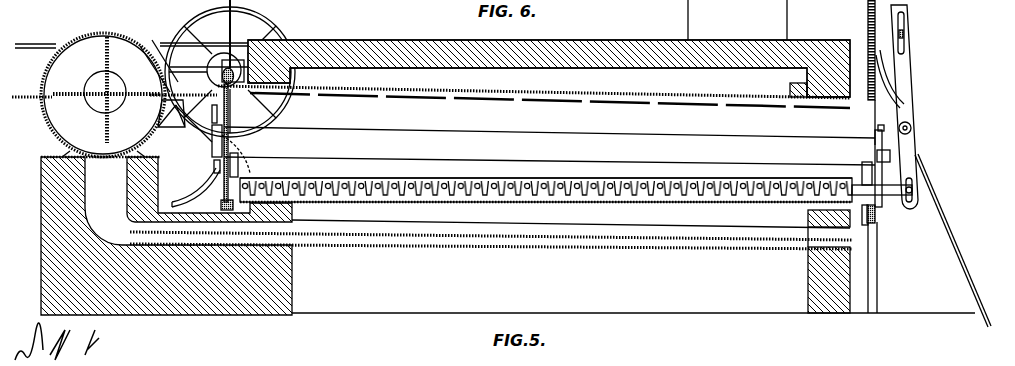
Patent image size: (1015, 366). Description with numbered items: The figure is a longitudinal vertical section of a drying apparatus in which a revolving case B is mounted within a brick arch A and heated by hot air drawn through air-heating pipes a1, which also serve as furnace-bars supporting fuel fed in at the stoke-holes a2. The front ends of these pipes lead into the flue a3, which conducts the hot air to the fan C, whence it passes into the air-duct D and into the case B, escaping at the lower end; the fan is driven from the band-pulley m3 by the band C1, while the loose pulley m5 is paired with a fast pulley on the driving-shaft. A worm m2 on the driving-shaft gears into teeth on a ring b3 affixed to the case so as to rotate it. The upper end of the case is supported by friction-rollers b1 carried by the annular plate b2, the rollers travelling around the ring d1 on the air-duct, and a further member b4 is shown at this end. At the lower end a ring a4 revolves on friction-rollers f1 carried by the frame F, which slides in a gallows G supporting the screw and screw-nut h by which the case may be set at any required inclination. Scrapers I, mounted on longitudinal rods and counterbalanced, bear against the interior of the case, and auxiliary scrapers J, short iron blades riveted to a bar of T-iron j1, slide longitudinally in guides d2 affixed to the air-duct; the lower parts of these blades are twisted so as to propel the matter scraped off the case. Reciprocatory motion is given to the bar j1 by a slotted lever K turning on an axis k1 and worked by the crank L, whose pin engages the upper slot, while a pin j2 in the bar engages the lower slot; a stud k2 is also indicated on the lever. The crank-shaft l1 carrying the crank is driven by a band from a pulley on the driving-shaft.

The brick arch A is at (549, 48).
The revolving case B is at (550, 122).
The fan C is at (103, 95).
The band C1 is at (176, 84).
The air-duct D is at (550, 154).
The frame F is at (835, 261).
The gallows G is at (878, 267).
The scrapers I is at (534, 106).
The auxiliary scrapers J is at (546, 196).
The slotted lever K is at (904, 107).
The crank L is at (909, 31).
The air-heating pipes a1 is at (491, 251).
The stoke-holes a2 is at (491, 230).
The flue a3 is at (445, 236).
The ring a4 is at (875, 210).
The friction-rollers b1 is at (196, 187).
The annular plate b2 is at (232, 147).
The toothed ring b3 is at (214, 72).
The bar b4 is at (213, 111).
The ring d1 is at (231, 149).
The guides d2 is at (551, 169).
The friction-rollers f1 is at (877, 219).
The screw-nut h is at (880, 54).
The bar of T-iron j1 is at (546, 172).
The pin j2 is at (920, 170).
The axis k1 is at (911, 128).
The stud k2 is at (886, 127).
The crank-shaft l1 is at (903, 38).
The worm m2 is at (236, 42).
The band-pulley m3 is at (222, 72).
The loose pulley m5 is at (34, 63).